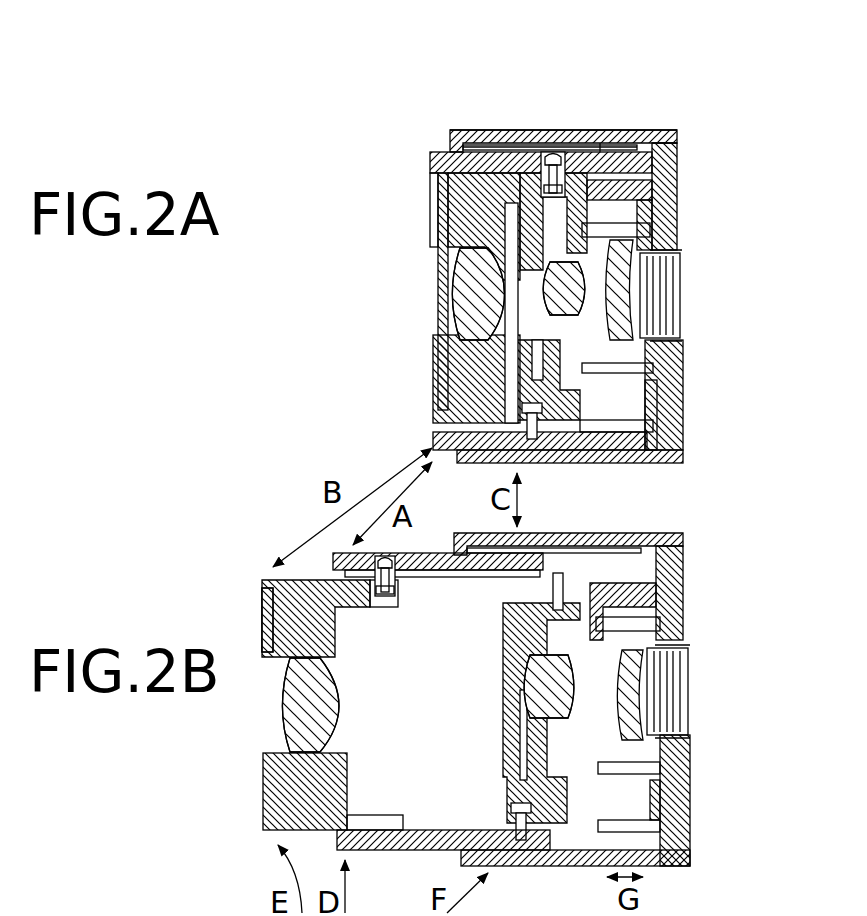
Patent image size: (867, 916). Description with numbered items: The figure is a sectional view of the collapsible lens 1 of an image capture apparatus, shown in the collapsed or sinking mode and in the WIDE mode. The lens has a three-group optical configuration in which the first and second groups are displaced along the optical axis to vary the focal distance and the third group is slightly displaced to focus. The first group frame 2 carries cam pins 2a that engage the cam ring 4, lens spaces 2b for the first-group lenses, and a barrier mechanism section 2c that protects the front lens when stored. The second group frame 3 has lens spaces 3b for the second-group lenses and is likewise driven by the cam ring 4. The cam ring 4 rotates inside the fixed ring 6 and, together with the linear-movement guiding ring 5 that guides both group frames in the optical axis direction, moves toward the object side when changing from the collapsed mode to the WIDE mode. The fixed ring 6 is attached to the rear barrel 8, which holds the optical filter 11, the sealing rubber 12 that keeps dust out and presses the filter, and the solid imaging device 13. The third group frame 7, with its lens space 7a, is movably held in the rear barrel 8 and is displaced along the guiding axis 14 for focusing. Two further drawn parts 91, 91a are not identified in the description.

The collapsible lens 1 is at (422, 138).
The first group frame 2 is at (440, 395).
The cam pins 2a is at (548, 152).
The lens spaces 2b is at (450, 368).
The barrier mechanism section 2c is at (440, 328).
The second group frame 3 is at (517, 172).
The lens spaces 3b is at (563, 172).
The cam ring 4 is at (437, 150).
The linear-movement guiding ring 5 is at (483, 133).
The fixed ring 6 is at (601, 172).
The third group frame 7 is at (658, 232).
The lens space 7a is at (665, 245).
The rear barrel 8 is at (662, 200).
The optical filter 11 is at (684, 378).
The sealing rubber 12 is at (683, 350).
The solid imaging device 13 is at (677, 321).
The guiding axis 14 is at (672, 162).
The housing 91 is at (632, 145).
The housing inner plate 91a is at (608, 172).